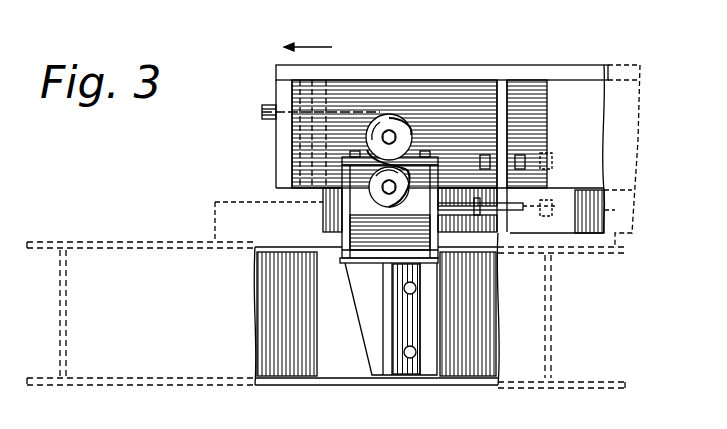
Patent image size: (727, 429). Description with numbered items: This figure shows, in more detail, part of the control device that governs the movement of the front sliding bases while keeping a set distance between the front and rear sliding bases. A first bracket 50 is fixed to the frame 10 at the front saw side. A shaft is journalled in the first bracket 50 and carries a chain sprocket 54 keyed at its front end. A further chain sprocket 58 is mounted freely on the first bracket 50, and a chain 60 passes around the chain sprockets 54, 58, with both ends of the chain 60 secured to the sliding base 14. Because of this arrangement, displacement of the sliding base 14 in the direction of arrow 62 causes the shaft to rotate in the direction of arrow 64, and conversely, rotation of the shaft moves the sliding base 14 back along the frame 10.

The frame 10 is at (345, 372).
The sliding base 14 is at (477, 65).
The first bracket 50 is at (363, 200).
The chain sprocket 54 is at (404, 133).
The chain sprocket 58 is at (404, 185).
The chain 60 is at (478, 212).
The arrow 62 is at (306, 47).
The arrow 64 is at (386, 125).